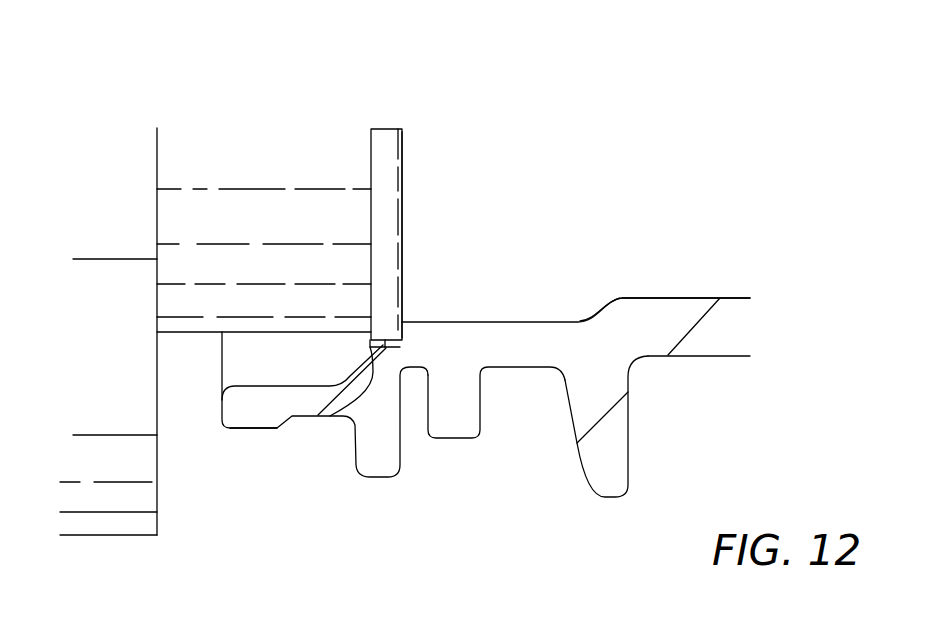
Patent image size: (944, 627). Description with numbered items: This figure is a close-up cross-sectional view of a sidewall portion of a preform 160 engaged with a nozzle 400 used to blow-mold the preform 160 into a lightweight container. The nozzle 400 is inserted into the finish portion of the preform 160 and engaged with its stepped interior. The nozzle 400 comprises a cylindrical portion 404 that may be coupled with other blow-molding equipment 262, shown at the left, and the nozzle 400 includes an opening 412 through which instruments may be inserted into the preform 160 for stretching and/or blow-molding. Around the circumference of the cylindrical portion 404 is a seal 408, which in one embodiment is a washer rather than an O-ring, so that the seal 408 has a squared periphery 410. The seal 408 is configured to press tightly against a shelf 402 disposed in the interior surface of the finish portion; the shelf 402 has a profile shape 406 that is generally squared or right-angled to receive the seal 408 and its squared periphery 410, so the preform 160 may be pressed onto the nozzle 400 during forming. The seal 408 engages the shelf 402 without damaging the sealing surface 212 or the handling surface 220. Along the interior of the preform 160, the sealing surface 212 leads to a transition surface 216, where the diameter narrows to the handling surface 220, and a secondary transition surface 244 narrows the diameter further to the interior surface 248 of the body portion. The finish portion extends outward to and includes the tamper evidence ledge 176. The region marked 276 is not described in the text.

The nozzle 400 is at (215, 88).
The shelf 402 is at (402, 190).
The cylindrical portion 404 is at (292, 227).
The profile shape 406 is at (400, 347).
The seal 408 is at (390, 180).
The squared periphery 410 is at (372, 343).
The opening 412 is at (420, 222).
The handling surface 220 is at (536, 306).
The secondary transition surface 244 is at (604, 308).
The interior surface 248 is at (717, 278).
The preform 160 is at (690, 357).
The tamper evidence ledge 176 is at (617, 498).
The sealing surface 212 is at (283, 374).
The transition surface 216 is at (331, 417).
The wall 276 is at (250, 410).
The blow-molding equipment 262 is at (102, 535).